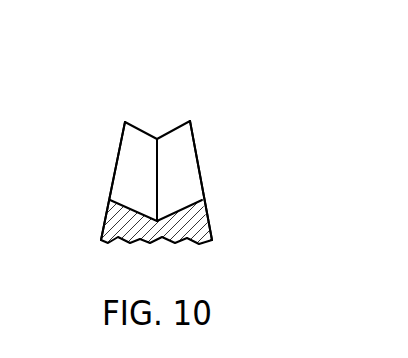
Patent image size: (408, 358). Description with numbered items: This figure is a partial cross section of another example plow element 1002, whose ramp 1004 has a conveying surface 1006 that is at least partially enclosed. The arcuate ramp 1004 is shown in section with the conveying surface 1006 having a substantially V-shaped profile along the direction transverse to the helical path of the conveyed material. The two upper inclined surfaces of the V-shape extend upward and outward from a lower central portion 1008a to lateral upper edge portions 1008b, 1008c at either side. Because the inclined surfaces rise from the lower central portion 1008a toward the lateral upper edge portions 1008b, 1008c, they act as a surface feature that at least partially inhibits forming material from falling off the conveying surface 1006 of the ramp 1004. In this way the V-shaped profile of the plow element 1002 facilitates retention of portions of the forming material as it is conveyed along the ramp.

The plow element 1002 is at (220, 150).
The ramp 1004 is at (188, 203).
The conveying surface 1006 is at (122, 198).
The lower central portion 1008a is at (155, 218).
The lateral upper edge portion 1008b is at (122, 133).
The lateral upper edge portion 1008c is at (192, 130).